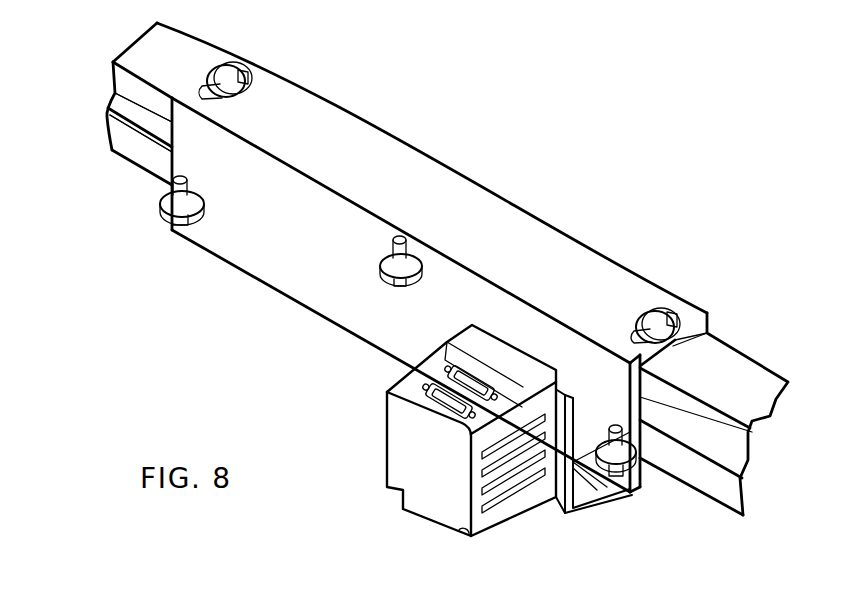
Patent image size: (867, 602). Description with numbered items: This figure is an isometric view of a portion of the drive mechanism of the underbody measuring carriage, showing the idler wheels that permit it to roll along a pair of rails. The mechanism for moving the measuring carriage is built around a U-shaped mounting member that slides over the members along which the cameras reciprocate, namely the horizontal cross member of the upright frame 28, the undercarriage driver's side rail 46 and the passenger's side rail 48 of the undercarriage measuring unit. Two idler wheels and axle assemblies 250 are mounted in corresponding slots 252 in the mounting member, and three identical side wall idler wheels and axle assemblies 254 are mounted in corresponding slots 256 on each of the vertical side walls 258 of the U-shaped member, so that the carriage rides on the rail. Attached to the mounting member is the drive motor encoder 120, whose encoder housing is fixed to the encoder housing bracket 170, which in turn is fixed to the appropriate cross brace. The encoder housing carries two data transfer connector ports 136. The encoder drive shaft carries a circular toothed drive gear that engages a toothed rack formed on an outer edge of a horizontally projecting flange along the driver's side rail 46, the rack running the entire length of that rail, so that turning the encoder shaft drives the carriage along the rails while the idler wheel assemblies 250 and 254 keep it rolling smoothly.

The upright frame 28 is at (123, 97).
The driver's side rail 46 is at (143, 107).
The passenger's side rail 48 is at (141, 133).
The drive motor encoder 120 is at (403, 493).
The data transfer connector ports 136 is at (452, 356).
The encoder housing bracket 170 is at (582, 508).
The idler wheels and axle assemblies 250 is at (225, 70).
The slots 252 is at (247, 98).
The side wall idler wheels and axle assemblies 254 is at (160, 218).
The slots 256 is at (202, 213).
The vertical side walls 258 is at (447, 164).